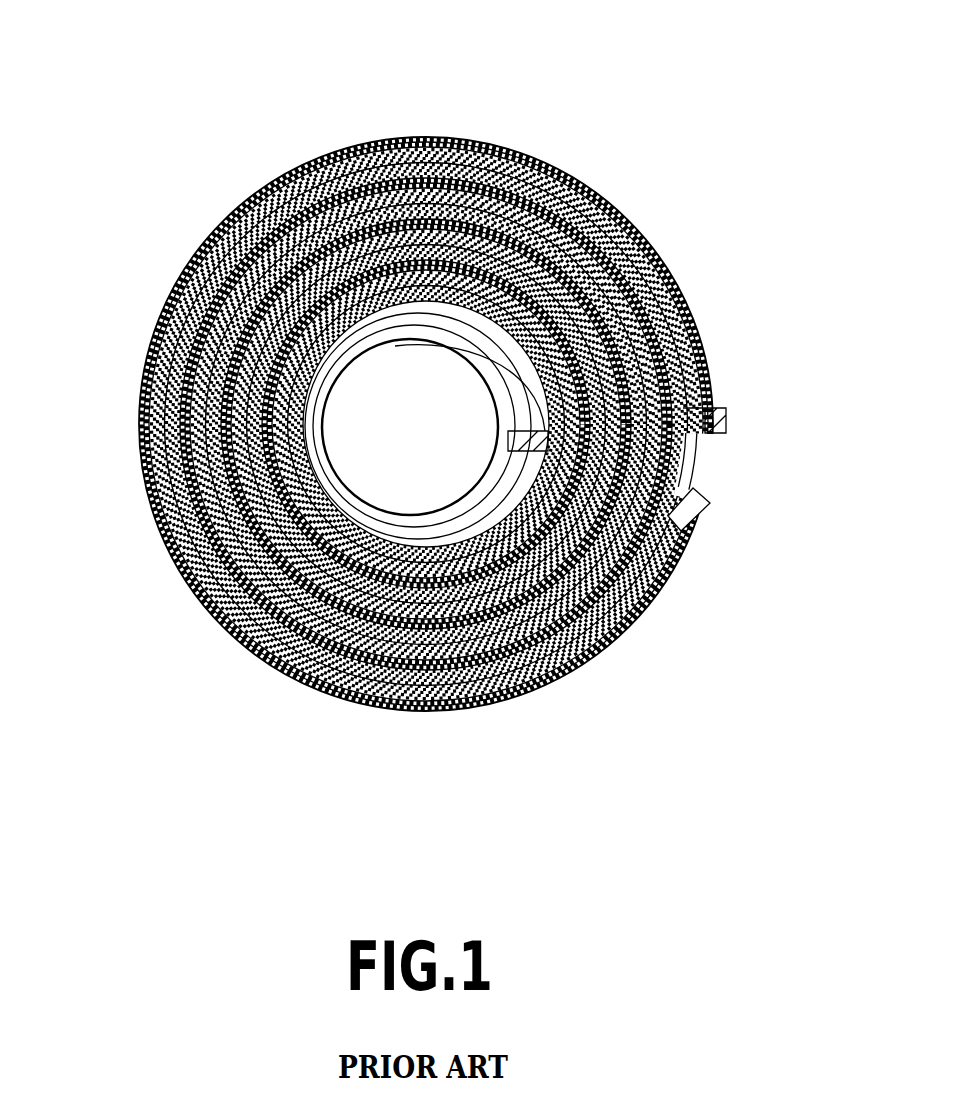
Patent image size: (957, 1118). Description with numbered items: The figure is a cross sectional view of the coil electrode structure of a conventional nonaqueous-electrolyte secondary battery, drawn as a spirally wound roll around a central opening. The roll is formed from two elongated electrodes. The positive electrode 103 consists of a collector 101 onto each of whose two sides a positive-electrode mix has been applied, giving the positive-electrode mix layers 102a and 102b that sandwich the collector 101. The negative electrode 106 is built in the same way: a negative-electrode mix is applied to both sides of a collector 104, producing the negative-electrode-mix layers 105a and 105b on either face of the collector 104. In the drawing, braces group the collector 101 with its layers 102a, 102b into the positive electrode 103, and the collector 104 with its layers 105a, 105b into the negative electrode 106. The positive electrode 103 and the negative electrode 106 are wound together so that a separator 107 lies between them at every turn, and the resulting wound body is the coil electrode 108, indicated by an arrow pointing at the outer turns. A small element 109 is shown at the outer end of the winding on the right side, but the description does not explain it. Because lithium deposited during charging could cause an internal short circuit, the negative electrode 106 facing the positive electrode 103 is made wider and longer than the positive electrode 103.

The collector 101 is at (422, 140).
The positive-electrode mix layer 102a is at (323, 153).
The positive-electrode mix layer 102b is at (272, 62).
The positive electrode 103 is at (426, 353).
The collector 104 is at (637, 225).
The negative-electrode-mix layer 105a is at (613, 198).
The negative-electrode-mix layer 105b is at (660, 257).
The negative electrode 106 is at (511, 420).
The separator 107 is at (588, 177).
The coil electrode 108 is at (465, 359).
The lead tab 109 is at (687, 510).